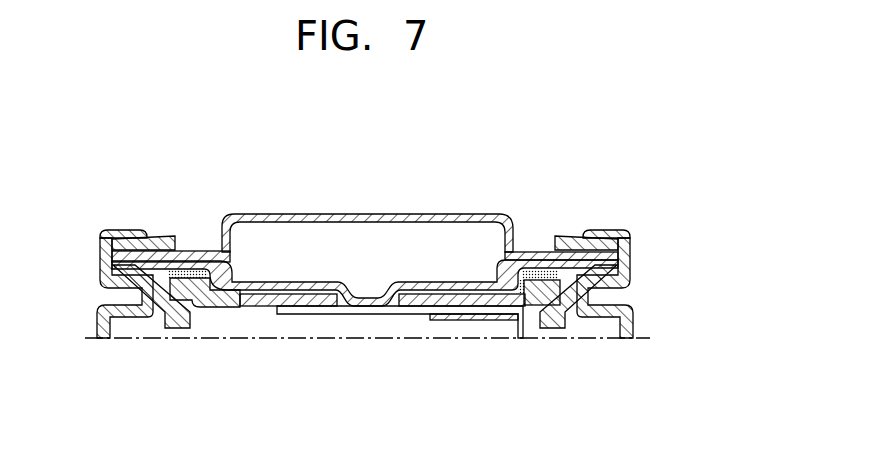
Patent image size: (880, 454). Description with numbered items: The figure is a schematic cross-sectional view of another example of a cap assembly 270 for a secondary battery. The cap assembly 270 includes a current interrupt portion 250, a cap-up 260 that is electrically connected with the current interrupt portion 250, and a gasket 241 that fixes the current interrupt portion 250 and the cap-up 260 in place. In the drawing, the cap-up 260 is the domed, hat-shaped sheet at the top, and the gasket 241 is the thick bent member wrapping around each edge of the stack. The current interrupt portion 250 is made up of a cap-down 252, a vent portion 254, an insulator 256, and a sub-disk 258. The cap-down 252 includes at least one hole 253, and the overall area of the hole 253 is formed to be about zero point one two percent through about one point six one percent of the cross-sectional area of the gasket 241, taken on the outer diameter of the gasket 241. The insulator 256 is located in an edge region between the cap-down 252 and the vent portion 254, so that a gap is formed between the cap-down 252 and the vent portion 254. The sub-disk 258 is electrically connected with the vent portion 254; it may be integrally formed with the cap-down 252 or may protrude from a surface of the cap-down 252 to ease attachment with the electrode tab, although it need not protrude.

The gasket 241 is at (111, 261).
The current interrupt portion 250 is at (354, 280).
The cap-down 252 is at (311, 296).
The hole 253 is at (251, 300).
The vent portion 254 is at (429, 279).
The insulator 256 is at (538, 258).
The sub-disk 258 is at (390, 316).
The cap-up 260 is at (374, 213).
The cap assembly 270 is at (507, 190).